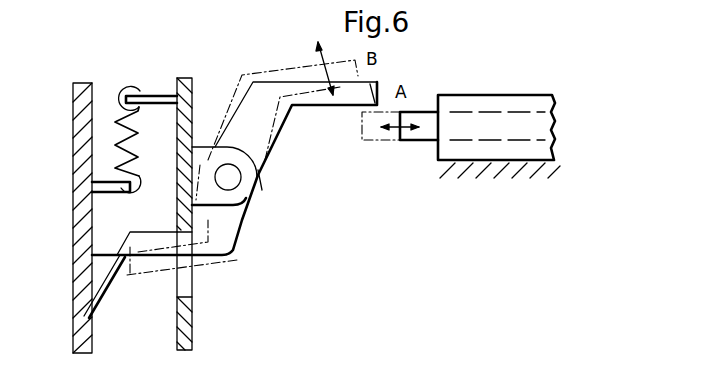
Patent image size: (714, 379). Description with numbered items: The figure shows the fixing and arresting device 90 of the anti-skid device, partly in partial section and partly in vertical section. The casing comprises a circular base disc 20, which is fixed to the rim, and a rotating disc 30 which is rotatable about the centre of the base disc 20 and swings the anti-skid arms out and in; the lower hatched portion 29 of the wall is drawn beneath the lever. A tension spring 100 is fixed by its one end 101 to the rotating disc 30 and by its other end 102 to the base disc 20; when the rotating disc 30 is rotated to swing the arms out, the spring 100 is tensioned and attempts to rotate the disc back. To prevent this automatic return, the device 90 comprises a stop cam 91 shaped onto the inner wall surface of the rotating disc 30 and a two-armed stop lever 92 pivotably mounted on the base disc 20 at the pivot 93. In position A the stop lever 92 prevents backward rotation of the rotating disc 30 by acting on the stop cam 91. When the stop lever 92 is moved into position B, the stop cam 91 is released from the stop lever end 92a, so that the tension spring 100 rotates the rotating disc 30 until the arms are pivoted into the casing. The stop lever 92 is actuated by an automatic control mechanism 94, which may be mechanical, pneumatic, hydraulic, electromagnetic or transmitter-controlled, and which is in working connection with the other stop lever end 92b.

The base disc 20 is at (193, 100).
The lower wall portion 29 is at (181, 280).
The rotating disc 30 is at (72, 327).
The fixing and arresting device 90 is at (267, 180).
The stop cam 91 is at (100, 272).
The two-armed stop lever 92 is at (262, 131).
The stop lever end 92a is at (130, 263).
The other stop lever end 92b is at (367, 92).
The pivot 93 is at (230, 180).
The automatic control mechanism 94 is at (492, 103).
The tension spring 100 is at (118, 125).
The spring end 101 is at (113, 177).
The other spring end 102 is at (126, 88).